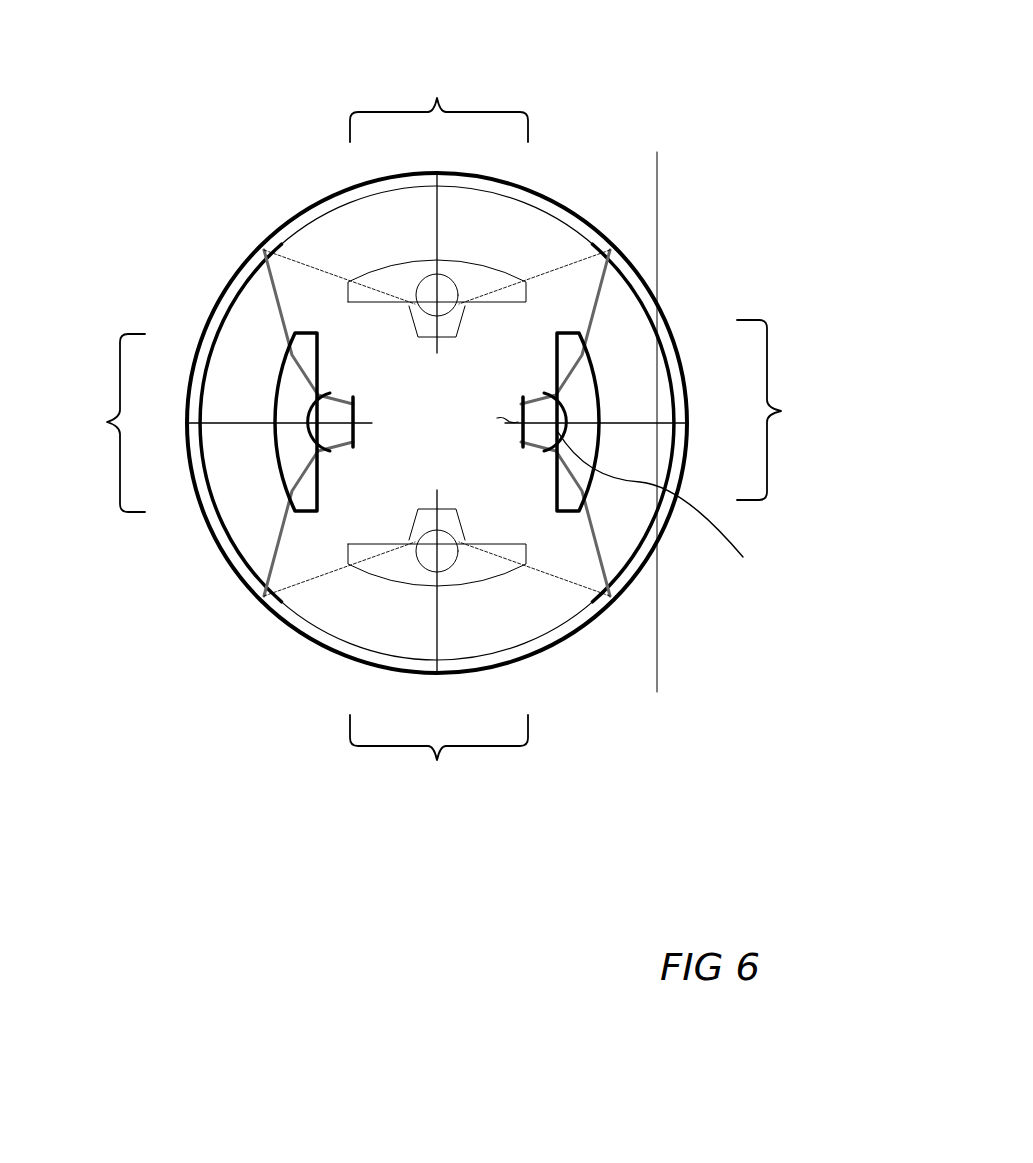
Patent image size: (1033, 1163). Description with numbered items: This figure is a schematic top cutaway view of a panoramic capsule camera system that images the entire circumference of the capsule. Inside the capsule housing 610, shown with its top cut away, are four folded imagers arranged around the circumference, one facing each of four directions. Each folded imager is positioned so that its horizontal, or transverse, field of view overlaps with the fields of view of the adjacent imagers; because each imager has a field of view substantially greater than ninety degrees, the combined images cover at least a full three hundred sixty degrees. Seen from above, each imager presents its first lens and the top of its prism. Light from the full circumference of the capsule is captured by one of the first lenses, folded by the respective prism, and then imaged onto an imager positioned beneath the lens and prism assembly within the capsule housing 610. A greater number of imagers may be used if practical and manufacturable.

The capsule housing 610 is at (648, 284).